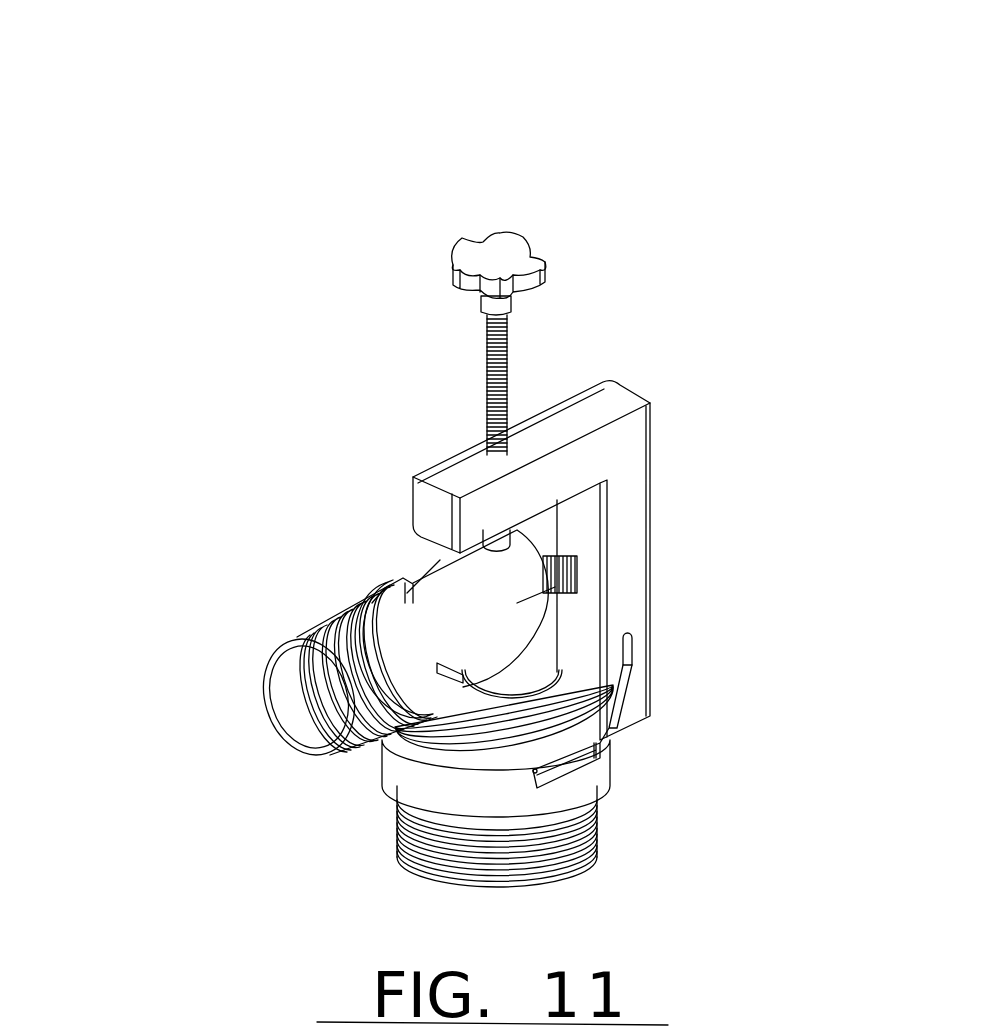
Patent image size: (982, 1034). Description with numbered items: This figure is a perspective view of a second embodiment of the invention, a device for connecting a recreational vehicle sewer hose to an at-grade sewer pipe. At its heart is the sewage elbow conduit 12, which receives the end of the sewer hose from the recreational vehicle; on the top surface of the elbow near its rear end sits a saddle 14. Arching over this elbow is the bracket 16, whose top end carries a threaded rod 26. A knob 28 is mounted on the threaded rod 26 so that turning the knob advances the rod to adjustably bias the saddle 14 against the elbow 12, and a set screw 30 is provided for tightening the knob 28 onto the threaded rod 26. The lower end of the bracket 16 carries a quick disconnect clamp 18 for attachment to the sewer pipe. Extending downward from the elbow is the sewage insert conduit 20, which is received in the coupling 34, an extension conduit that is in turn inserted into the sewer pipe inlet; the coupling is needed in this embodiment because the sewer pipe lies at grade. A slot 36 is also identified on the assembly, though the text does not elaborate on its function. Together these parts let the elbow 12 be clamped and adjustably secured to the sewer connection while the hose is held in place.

The sewage elbow conduit 12 is at (215, 652).
The saddle 14 is at (388, 533).
The bracket 16 is at (397, 432).
The quick disconnect clamp 18 is at (612, 724).
The sewage insert conduit 20 is at (616, 685).
The threaded rod 26 is at (443, 326).
The knob 28 is at (428, 179).
The set screw 30 is at (557, 327).
The coupling 34 is at (627, 833).
The slot 36 is at (630, 634).